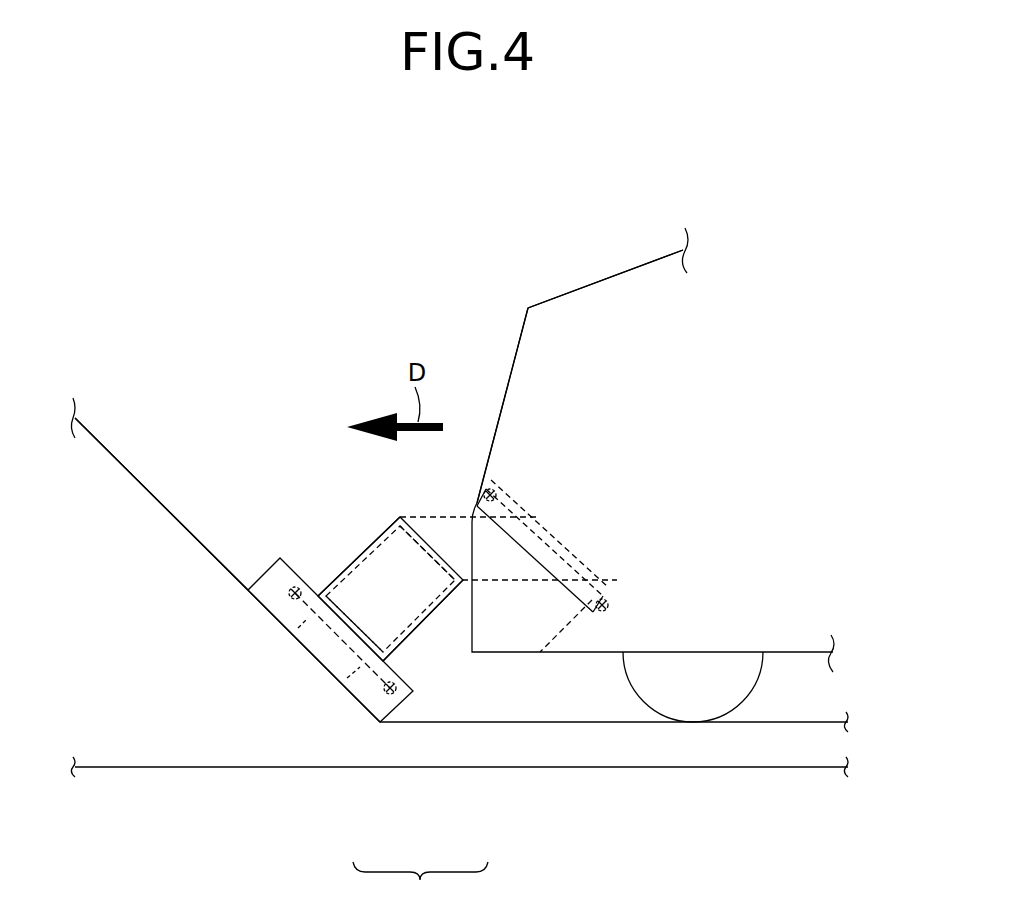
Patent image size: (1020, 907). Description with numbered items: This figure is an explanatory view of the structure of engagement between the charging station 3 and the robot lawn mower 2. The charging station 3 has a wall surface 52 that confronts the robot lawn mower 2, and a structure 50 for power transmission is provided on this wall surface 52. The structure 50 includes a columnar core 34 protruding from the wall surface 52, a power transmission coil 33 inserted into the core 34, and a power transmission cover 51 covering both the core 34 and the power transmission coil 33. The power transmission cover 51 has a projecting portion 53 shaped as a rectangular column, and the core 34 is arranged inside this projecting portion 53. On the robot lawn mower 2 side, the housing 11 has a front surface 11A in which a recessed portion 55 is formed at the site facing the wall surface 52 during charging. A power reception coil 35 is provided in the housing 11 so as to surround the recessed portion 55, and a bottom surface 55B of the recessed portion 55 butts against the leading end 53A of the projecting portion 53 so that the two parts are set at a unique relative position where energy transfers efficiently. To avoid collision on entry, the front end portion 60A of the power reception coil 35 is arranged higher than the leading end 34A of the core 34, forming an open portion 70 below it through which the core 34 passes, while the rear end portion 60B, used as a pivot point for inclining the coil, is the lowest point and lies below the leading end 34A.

The robot lawn mower 2 is at (590, 238).
The housing 11 is at (651, 260).
The front surface 11A is at (511, 377).
The charging station 3 is at (140, 442).
The wall surface 52 is at (183, 523).
The projecting portion 53 is at (353, 552).
The leading end 53A is at (432, 537).
The leading end 34A is at (427, 553).
The open portion 70 is at (478, 506).
The front end portion 60A is at (497, 493).
The rear end portion 60B is at (609, 612).
The bottom surface 55B is at (560, 545).
The power reception coil 35 is at (608, 600).
The recessed portion 55 is at (532, 625).
The power transmission coil 33 is at (363, 690).
The core 34 is at (410, 622).
The power transmission cover 51 is at (437, 605).
The structure for power transmission 50 is at (420, 884).